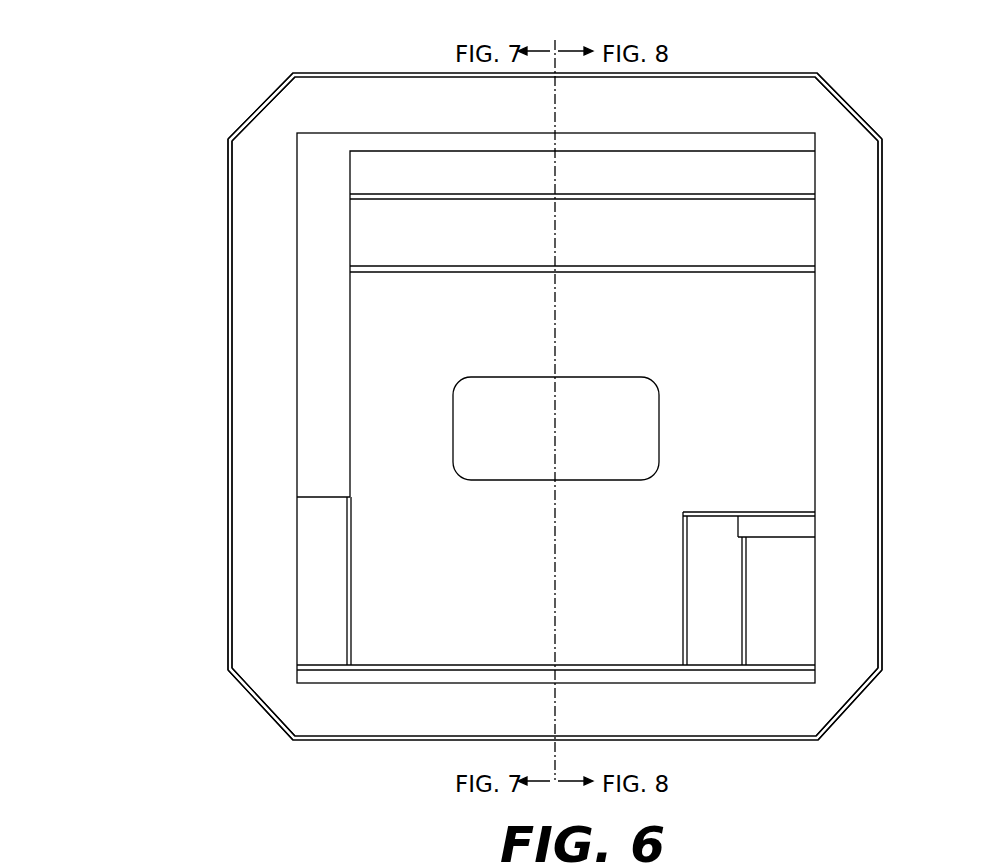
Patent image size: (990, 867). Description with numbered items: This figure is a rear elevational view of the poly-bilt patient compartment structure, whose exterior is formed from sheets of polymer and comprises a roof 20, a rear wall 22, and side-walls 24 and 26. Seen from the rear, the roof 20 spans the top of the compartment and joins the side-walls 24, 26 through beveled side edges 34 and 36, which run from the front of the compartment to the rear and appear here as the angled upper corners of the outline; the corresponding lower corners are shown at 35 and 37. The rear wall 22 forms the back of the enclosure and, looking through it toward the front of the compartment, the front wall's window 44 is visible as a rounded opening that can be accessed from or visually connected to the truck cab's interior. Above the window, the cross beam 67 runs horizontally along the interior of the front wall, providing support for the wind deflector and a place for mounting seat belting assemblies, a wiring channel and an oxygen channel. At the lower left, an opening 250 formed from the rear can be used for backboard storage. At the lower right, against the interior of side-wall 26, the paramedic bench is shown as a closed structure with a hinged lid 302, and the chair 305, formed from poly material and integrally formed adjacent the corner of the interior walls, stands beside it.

The roof 20 is at (730, 73).
The rear wall 22 is at (246, 633).
The side-wall 24 is at (228, 457).
The side-wall 26 is at (883, 412).
The beveled side edge 34 is at (256, 108).
The lower left corner wall 35 is at (261, 711).
The beveled side edge 36 is at (852, 106).
The lower right corner wall 37 is at (850, 713).
The window 44 is at (603, 377).
The cross beam 67 is at (727, 272).
The opening 250 is at (320, 580).
The hinged lid 302 is at (795, 528).
The chair 305 is at (719, 512).